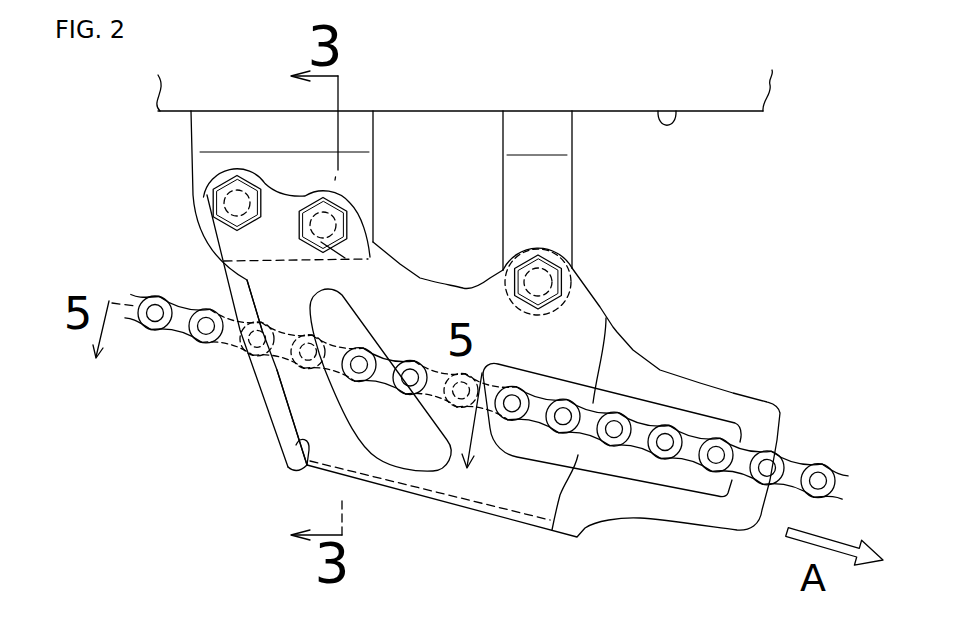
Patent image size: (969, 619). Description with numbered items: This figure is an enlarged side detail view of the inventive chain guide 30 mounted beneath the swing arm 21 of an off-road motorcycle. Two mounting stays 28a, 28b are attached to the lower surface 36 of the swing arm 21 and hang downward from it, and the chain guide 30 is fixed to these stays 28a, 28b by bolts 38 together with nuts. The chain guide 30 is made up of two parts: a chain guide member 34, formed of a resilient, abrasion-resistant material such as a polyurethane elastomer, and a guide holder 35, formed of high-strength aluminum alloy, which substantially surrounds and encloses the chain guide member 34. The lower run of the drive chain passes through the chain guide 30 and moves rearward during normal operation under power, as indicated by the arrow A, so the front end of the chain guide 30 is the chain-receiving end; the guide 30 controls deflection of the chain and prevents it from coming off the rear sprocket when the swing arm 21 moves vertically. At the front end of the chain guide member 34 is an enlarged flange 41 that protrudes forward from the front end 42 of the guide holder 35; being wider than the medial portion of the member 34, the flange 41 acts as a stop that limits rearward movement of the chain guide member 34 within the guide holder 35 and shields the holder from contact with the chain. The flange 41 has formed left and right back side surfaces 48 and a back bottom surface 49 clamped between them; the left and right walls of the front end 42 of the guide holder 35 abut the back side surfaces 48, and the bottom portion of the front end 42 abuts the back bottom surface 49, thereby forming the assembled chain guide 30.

The swing arm 21 is at (738, 87).
The lower surface of the swing arm 36 is at (680, 111).
The mounting stay 28a is at (367, 206).
The mounting stay 28b is at (558, 198).
The bolt 38 is at (213, 194).
The chain guide 30 is at (188, 478).
The flange 41 is at (258, 377).
The guide holder 35 is at (300, 392).
The front end of the guide holder 42 is at (283, 412).
The chain guide member 34 is at (283, 435).
The back side surfaces of the flange 48 is at (288, 468).
The back bottom surface 49 is at (317, 480).